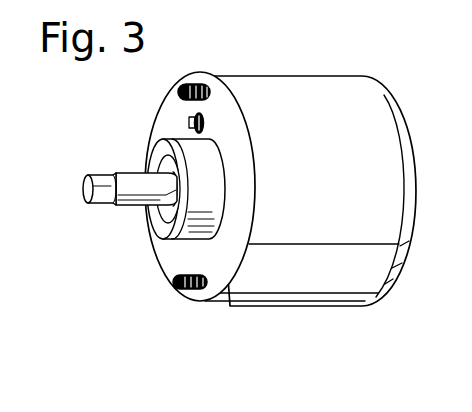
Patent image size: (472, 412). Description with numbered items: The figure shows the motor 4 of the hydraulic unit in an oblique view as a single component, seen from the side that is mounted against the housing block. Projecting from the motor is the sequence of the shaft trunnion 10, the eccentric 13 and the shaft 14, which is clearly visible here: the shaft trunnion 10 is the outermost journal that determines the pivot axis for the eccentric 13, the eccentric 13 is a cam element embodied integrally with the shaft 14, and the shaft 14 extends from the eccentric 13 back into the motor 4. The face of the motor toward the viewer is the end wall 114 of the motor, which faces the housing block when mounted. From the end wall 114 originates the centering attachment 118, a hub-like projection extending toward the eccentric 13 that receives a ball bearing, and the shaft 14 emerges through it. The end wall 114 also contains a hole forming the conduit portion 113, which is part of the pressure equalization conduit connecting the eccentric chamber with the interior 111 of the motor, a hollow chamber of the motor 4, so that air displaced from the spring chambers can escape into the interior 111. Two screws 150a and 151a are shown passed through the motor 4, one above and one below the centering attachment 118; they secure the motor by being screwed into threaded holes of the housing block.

The motor 4 is at (328, 159).
The shaft trunnion 10 is at (102, 193).
The eccentric 13 is at (135, 193).
The shaft 14 is at (152, 222).
The interior of the motor 111 is at (192, 118).
The conduit portion 113 is at (194, 124).
The end wall of the motor 114 is at (228, 132).
The centering attachment 118 is at (212, 192).
The screw 150a is at (193, 83).
The screw 151a is at (190, 290).